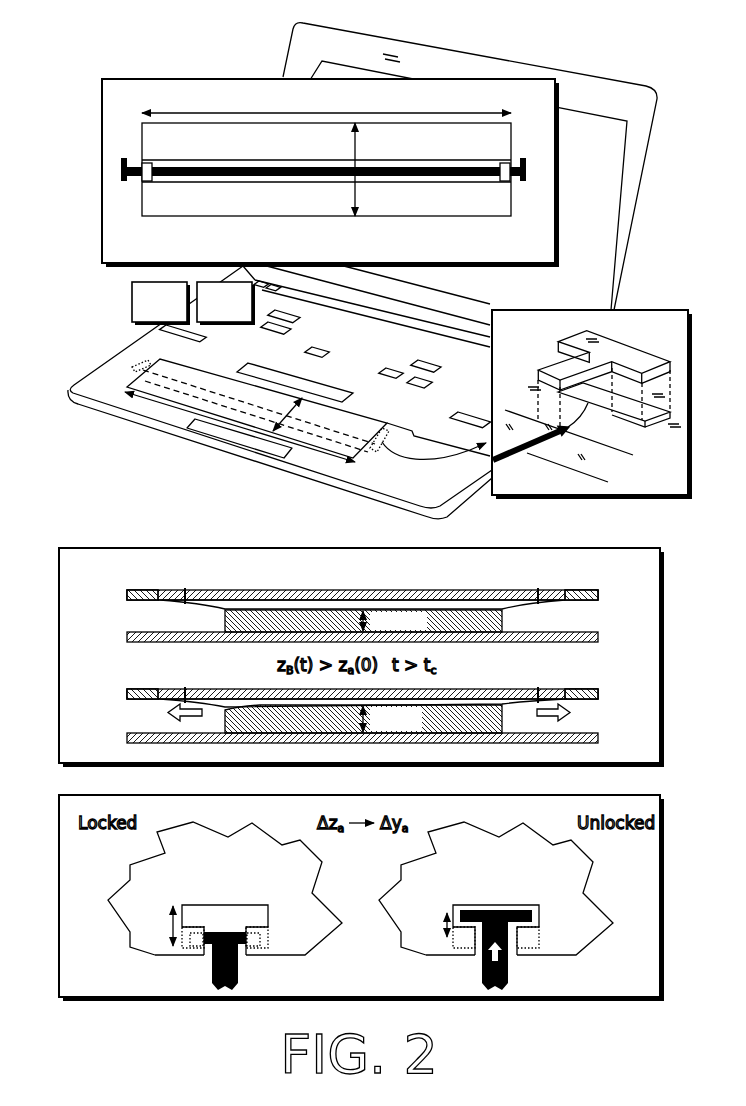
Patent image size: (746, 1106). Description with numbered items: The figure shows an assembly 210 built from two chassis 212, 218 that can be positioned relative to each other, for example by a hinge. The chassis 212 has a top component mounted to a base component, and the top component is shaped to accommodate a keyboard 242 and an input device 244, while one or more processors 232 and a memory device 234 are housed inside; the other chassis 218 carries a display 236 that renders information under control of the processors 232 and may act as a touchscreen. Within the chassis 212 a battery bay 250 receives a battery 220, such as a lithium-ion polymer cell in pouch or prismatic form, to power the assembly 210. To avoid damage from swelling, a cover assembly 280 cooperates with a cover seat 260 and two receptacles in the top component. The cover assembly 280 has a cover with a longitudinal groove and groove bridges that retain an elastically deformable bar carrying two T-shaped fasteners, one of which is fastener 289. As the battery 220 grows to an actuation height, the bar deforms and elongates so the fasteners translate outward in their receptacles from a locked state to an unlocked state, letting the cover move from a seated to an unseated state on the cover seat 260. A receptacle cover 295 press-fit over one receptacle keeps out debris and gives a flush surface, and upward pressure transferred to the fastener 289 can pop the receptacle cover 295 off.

The assembly 210 is at (665, 54).
The chassis 212 is at (257, 399).
The chassis 218 is at (660, 245).
The battery 220 is at (503, 617).
The processors 232 is at (210, 311).
The memory device 234 is at (145, 311).
The display 236 is at (560, 302).
The keyboard 242 is at (381, 357).
The input device 244 is at (243, 438).
The battery bay 250 is at (143, 617).
The cover seat 260 is at (357, 457).
The cover assembly 280 is at (203, 378).
The fastener 289 is at (523, 182).
The receptacle cover 295 is at (628, 352).